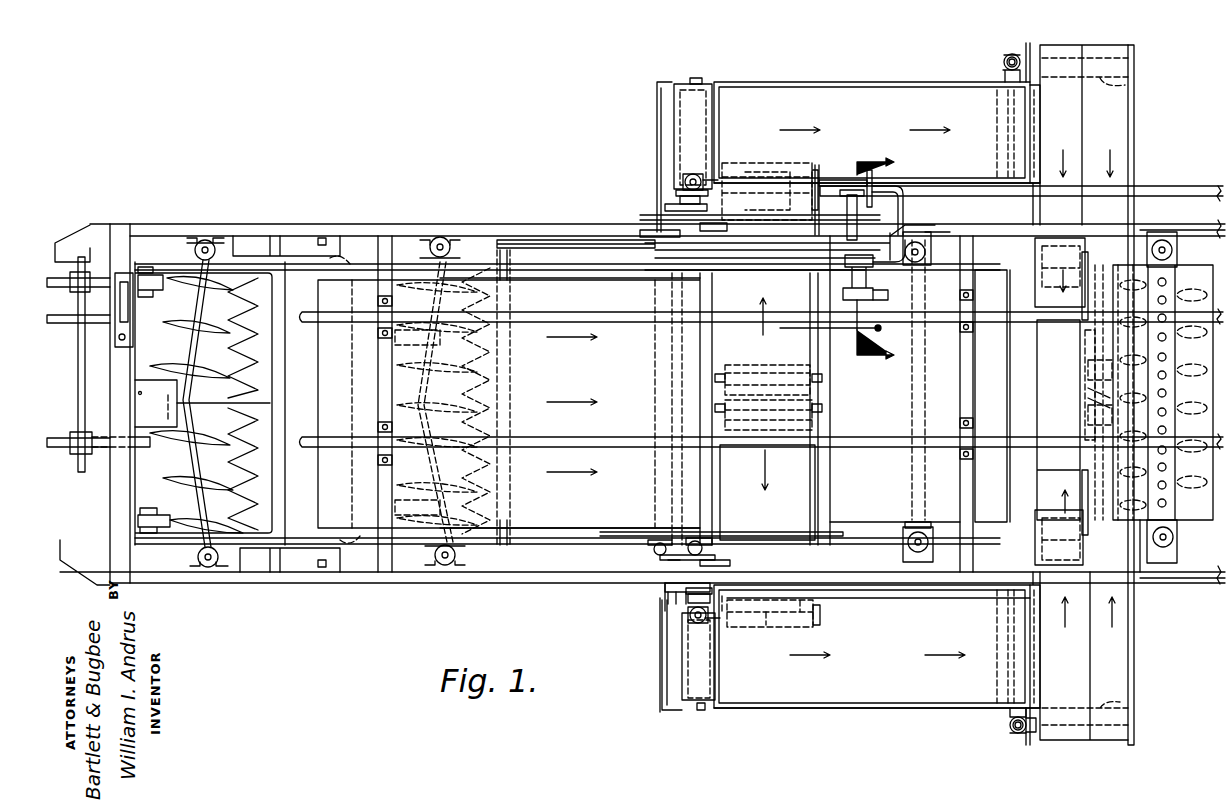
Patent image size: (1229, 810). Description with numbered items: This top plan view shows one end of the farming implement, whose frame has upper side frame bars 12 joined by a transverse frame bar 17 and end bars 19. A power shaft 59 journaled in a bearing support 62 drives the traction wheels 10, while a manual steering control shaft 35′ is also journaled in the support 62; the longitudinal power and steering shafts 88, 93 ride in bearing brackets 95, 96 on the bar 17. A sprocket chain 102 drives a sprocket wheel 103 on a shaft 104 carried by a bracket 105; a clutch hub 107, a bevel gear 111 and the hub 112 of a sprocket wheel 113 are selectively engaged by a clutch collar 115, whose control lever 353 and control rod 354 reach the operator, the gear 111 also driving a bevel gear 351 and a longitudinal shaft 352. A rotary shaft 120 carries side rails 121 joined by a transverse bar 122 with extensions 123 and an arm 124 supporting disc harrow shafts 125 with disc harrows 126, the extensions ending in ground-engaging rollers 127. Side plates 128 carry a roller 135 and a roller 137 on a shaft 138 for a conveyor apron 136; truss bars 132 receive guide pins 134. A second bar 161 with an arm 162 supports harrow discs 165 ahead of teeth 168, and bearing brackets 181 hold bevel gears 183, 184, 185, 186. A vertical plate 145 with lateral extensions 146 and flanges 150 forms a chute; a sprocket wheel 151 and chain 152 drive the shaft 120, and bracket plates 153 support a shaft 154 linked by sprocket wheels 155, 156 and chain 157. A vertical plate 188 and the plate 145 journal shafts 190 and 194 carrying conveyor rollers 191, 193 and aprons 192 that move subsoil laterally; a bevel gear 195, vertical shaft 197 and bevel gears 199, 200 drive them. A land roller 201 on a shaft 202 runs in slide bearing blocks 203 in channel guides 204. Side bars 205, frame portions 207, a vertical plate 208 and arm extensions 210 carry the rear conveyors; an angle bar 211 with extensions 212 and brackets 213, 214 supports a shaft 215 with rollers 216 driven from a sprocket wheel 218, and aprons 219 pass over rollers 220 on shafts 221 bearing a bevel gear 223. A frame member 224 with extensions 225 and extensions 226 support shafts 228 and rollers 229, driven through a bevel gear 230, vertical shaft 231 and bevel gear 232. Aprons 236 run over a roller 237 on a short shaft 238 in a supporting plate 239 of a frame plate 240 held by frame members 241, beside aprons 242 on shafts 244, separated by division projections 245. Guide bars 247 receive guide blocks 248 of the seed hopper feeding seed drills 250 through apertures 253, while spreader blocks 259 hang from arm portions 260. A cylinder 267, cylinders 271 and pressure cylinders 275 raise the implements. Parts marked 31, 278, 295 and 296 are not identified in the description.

The traction wheels 10 is at (894, 261).
The upper frame bars 12 is at (385, 224).
The transversely extending frame bar 17 is at (378, 400).
The end bars 19 is at (110, 470).
The auger flight 31 is at (228, 336).
The manual steering control shaft 35′ is at (103, 262).
The power shaft 59 is at (62, 322).
The bearing support 62 is at (134, 322).
The power shaft 88 is at (604, 317).
The steering shaft extension 93 is at (615, 440).
The bearing brackets 95 is at (378, 315).
The bearing brackets 96 is at (382, 448).
The sprocket chain 102 is at (537, 240).
The sprocket wheel 103 is at (898, 228).
The shaft 104 is at (848, 205).
The bracket 105 is at (910, 190).
The clutch hub 107 is at (853, 325).
The bevel gear 111 is at (866, 182).
The hub 112 is at (843, 280).
The sprocket wheel 113 is at (925, 232).
The clutch collar 115 is at (880, 275).
The rotary shaft 120 is at (668, 385).
The side rails 121 is at (472, 264).
The transverse bar 122 is at (272, 374).
The extensions 123 is at (160, 268).
The arm 124 is at (220, 395).
The disc harrow shafts 125 is at (195, 350).
The disc harrows 126 is at (190, 281).
The ground-engaging rollers 127 is at (147, 267).
The side plates 128 is at (557, 279).
The truss bars 132 is at (290, 236).
The guide pins 134 is at (322, 236).
The roller 135 is at (645, 462).
The conveyor apron 136 is at (515, 409).
The roller 137 is at (352, 360).
The shaft 138 is at (340, 270).
The vertical plate 145 is at (838, 462).
The lateral extensions 146 is at (818, 170).
The flanges 150 is at (745, 260).
The sprocket wheel 151 is at (643, 226).
The sprocket chain 152 is at (775, 258).
The bracket plates 153 is at (727, 228).
The rotary shaft 154 is at (680, 237).
The sprocket wheels 155 is at (712, 588).
The sprocket wheel 156 is at (665, 208).
The sprocket chain 157 is at (649, 602).
The transversely extending bar 161 is at (510, 366).
The forwardly projecting arm 162 is at (448, 372).
The harrow discs 165 is at (432, 338).
The teeth 168 is at (472, 418).
The bearing brackets 181 is at (668, 560).
The bevel gear 183 is at (654, 550).
The bevel gear 184 is at (648, 545).
The bevel gear 185 is at (705, 545).
The bevel gear 186 is at (745, 549).
The vertical plate 188 is at (718, 210).
The conveyor roller supporting shafts 190 is at (772, 165).
The conveyor rollers 191 is at (785, 176).
The conveyor aprons 192 is at (840, 585).
The conveyor rollers 193 is at (766, 362).
The conveyor roller supporting shafts 194 is at (828, 378).
The bevel gear 195 is at (703, 178).
The vertical shaft 197 is at (684, 182).
The bevel gear 199 is at (693, 174).
The bevel gear 200 is at (722, 605).
The land roller 201 is at (993, 352).
The shaft 202 is at (915, 506).
The slide bearing blocks 203 is at (905, 532).
The channel guides 204 is at (925, 245).
The side bars 205 is at (846, 82).
The frame portions 207 is at (1002, 186).
The vertical plate 208 is at (1037, 393).
The arm extensions 210 is at (1055, 150).
The angle bar 211 is at (662, 675).
The extensions 212 is at (657, 85).
The shaft-supporting brackets 213 is at (680, 84).
The intermediate shaft supporting brackets 214 is at (680, 196).
The conveyor roller shaft 215 is at (702, 78).
The conveyor rollers 216 is at (715, 684).
The sprocket wheel 218 is at (712, 190).
The conveyor aprons 219 is at (890, 98).
The conveyor rollers 220 is at (998, 150).
The shafts 221 is at (1015, 115).
The bevel gear 223 is at (1012, 55).
The frame member 224 is at (1140, 548).
The lateral extensions 225 is at (1138, 106).
The extensions 226 is at (1030, 45).
The conveyor roller shafts 228 is at (1110, 55).
The conveyor rollers 229 is at (1128, 80).
The bevel gear 230 is at (1020, 740).
The vertical shaft 231 is at (1004, 62).
The bevel gear 232 is at (1005, 55).
The conveyor apron 236 is at (1037, 138).
The conveyor roller 237 is at (1040, 242).
The short shaft 238 is at (1040, 262).
The supporting plate 239 is at (1100, 265).
The frame plate 240 is at (1098, 392).
The frame members 241 is at (1043, 324).
The conveyor aprons 242 is at (1122, 646).
The shafts 244 is at (1085, 352).
The laterally extending projections 245 is at (1082, 258).
The vertical guide bars 247 is at (1178, 240).
The guide blocks 248 is at (1175, 228).
The seed drills 250 is at (1213, 268).
The apertures 253 is at (1180, 395).
The spreader blocks 259 is at (1098, 370).
The arm portions 260 is at (1098, 410).
The cylinder 267 is at (205, 239).
The cylinders 271 is at (442, 236).
The pressure cylinders 275 is at (933, 553).
The gear 278 is at (1172, 252).
The control box 295 is at (156, 403).
The switch 296 is at (141, 392).
The bevel gear 351 is at (856, 176).
The shaft 352 is at (1160, 194).
The control lever 353 is at (878, 290).
The control rod 354 is at (805, 332).